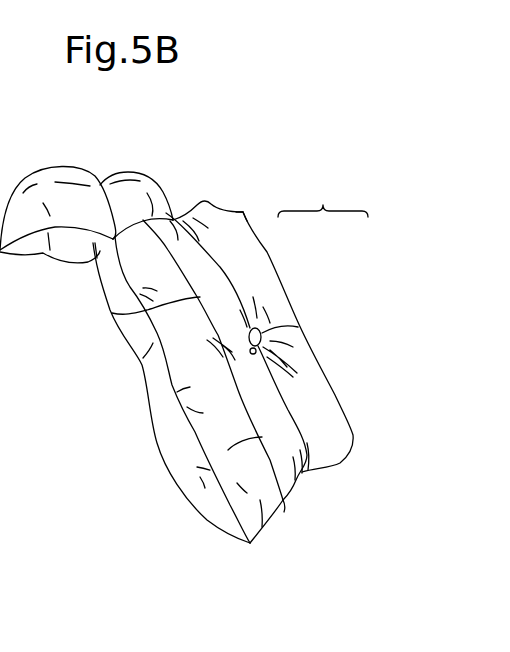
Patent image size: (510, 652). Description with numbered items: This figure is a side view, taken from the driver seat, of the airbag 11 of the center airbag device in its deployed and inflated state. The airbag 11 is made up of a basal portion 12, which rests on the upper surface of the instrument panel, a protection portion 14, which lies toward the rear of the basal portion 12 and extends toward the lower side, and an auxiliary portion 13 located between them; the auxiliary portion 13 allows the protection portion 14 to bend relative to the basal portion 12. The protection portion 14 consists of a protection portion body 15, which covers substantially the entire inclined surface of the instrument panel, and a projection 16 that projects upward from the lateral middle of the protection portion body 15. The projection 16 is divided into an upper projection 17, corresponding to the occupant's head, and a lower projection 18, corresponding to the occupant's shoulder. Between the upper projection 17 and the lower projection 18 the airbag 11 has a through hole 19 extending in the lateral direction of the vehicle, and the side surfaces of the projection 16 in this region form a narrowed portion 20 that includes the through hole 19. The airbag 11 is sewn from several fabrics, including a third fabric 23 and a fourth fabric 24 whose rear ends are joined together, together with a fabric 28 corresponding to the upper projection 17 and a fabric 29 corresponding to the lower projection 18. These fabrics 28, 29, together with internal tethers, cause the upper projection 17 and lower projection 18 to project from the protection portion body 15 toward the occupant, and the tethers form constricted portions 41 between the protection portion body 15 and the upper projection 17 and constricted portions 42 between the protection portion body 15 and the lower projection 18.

The airbag 11 is at (231, 151).
The basal portion 12 is at (60, 168).
The auxiliary portion 13 is at (135, 172).
The protection portion 14 is at (163, 476).
The protection portion body 15 is at (162, 424).
The projection 16 is at (323, 195).
The upper projection 17 is at (258, 262).
The lower projection 18 is at (308, 383).
The through hole 19 is at (298, 327).
The narrowed portion 20 is at (217, 339).
The third fabric 23 is at (278, 507).
The fourth fabric 24 is at (215, 523).
The fabric 28 is at (243, 212).
The fabric 29 is at (335, 393).
The constricted portions 41 is at (112, 313).
The constricted portions 42 is at (220, 485).